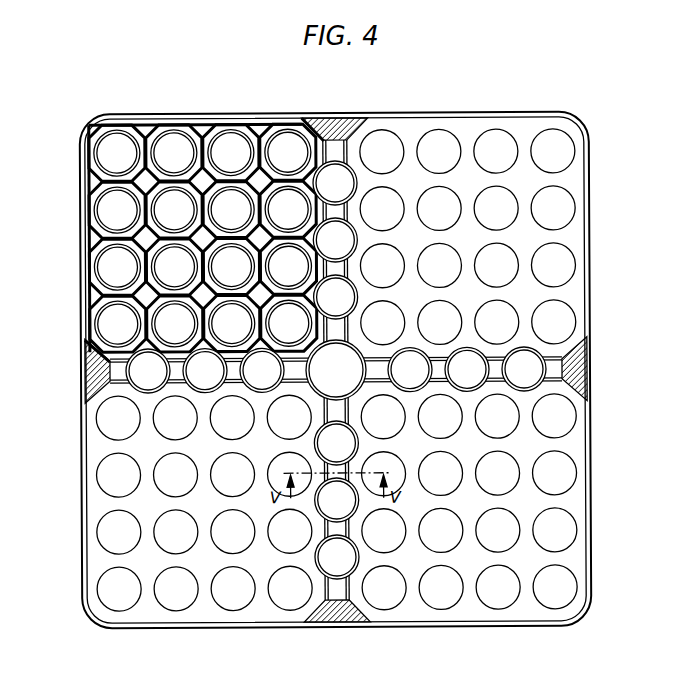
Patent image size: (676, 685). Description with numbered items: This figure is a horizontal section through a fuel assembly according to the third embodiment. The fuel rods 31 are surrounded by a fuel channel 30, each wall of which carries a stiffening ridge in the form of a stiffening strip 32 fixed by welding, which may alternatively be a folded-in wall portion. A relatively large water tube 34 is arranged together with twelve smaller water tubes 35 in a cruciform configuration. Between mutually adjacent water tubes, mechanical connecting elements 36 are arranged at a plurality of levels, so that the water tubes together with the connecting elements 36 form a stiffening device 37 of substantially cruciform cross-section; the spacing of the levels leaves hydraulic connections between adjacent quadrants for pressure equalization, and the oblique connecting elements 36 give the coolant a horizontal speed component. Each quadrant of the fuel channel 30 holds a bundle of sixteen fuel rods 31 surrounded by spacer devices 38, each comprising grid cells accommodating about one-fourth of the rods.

The fuel channel 30 is at (270, 107).
The fuel rods 31 is at (392, 144).
The stiffening strip 32 is at (591, 359).
The water tube 34 is at (336, 370).
The smaller water tubes 35 is at (472, 362).
The connecting elements 36 is at (240, 392).
The stiffening device 37 is at (360, 568).
The spacer devices 38 is at (122, 304).